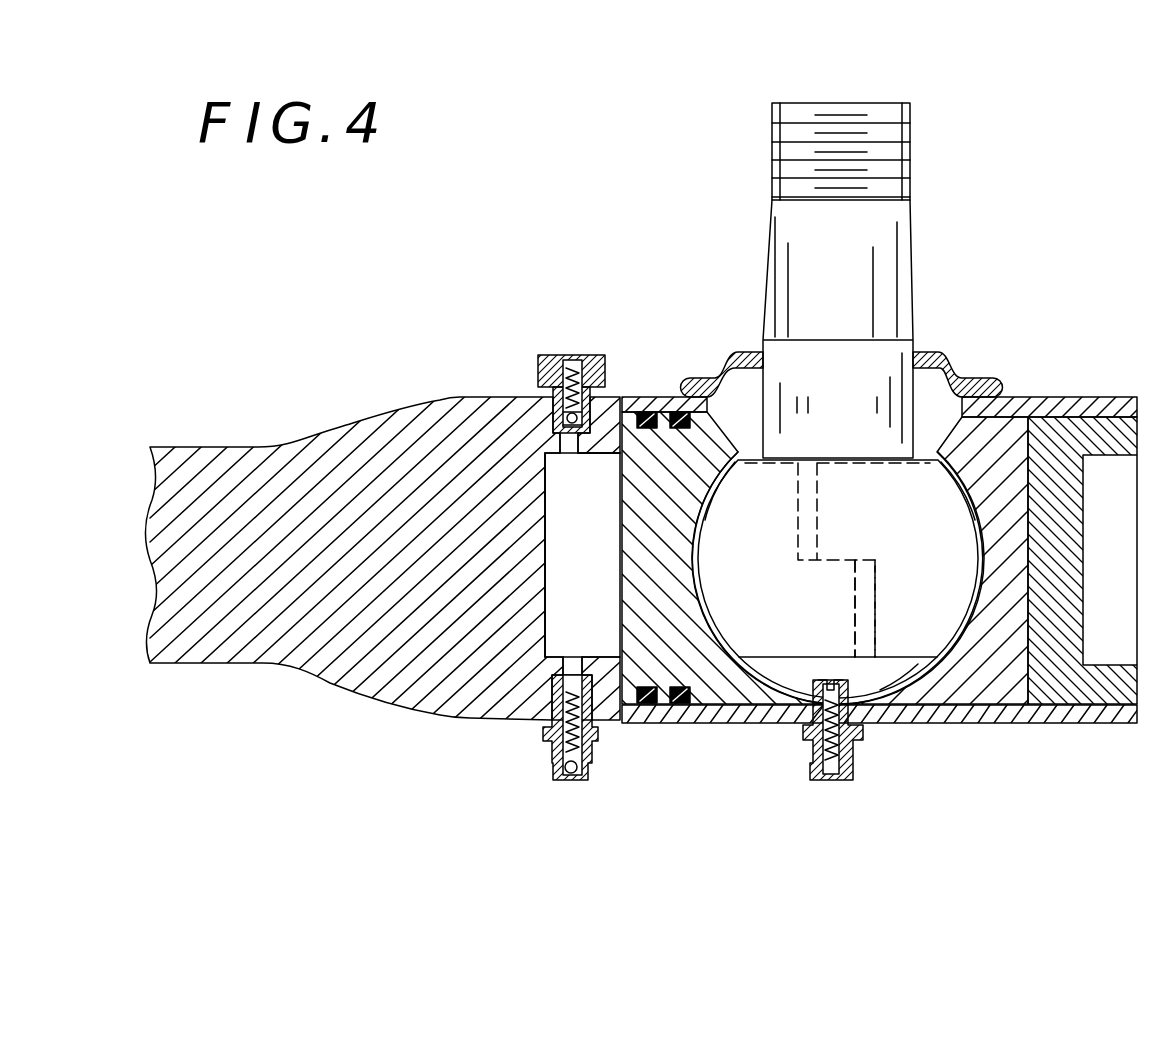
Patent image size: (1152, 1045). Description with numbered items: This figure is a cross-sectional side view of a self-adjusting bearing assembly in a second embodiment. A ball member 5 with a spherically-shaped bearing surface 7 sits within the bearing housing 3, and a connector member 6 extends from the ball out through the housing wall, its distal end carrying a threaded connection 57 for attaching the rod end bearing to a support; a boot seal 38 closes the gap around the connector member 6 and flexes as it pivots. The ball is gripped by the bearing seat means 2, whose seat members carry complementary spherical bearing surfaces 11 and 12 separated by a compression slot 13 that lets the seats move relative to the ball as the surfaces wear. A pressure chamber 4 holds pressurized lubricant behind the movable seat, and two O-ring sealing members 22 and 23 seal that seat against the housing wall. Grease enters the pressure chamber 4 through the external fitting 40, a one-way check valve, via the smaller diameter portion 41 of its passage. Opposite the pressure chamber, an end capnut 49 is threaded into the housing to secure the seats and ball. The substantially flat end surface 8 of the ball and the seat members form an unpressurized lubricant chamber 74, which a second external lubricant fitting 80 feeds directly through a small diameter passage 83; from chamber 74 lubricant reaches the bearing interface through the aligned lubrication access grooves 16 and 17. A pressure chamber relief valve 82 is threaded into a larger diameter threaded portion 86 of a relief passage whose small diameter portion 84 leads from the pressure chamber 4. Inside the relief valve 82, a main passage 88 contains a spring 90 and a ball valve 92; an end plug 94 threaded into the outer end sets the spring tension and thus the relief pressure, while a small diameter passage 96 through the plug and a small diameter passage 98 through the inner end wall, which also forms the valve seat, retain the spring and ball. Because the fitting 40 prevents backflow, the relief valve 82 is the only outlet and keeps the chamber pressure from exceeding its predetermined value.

The bearing seat means 2 is at (997, 448).
The bearing housing 3 is at (376, 425).
The pressure chamber 4 is at (545, 478).
The ball member 5 is at (878, 480).
The connector member 6 is at (870, 244).
The bearing surface 7 is at (837, 560).
The end surface 8 is at (788, 652).
The bearing surface 11 is at (978, 562).
The bearing surface 12 is at (708, 522).
The compression slot 13 is at (875, 660).
The lubrication access groove 16 is at (962, 705).
The lubrication access groove 17 is at (755, 705).
The sealing member 22 is at (680, 705).
The sealing member 23 is at (645, 705).
The boot seal 38 is at (716, 372).
The external fitting 40 is at (548, 775).
The smaller diameter portion 41 is at (575, 657).
The end capnut 49 is at (1075, 690).
The threaded connection 57 is at (830, 120).
The unpressurized lubricant chamber 74 is at (895, 678).
The second external lubricant fitting 80 is at (828, 717).
The pressure chamber relief valve 82 is at (590, 305).
The small diameter passage 83 is at (830, 680).
The small diameter portion 84 is at (563, 447).
The larger diameter threaded portion 86 is at (612, 447).
The main portion of internal passage 88 is at (556, 450).
The spring 90 is at (592, 387).
The ball valve 92 is at (604, 418).
The end plug 94 is at (563, 352).
The small diameter passage 96 is at (572, 352).
The small diameter passage 98 is at (596, 448).